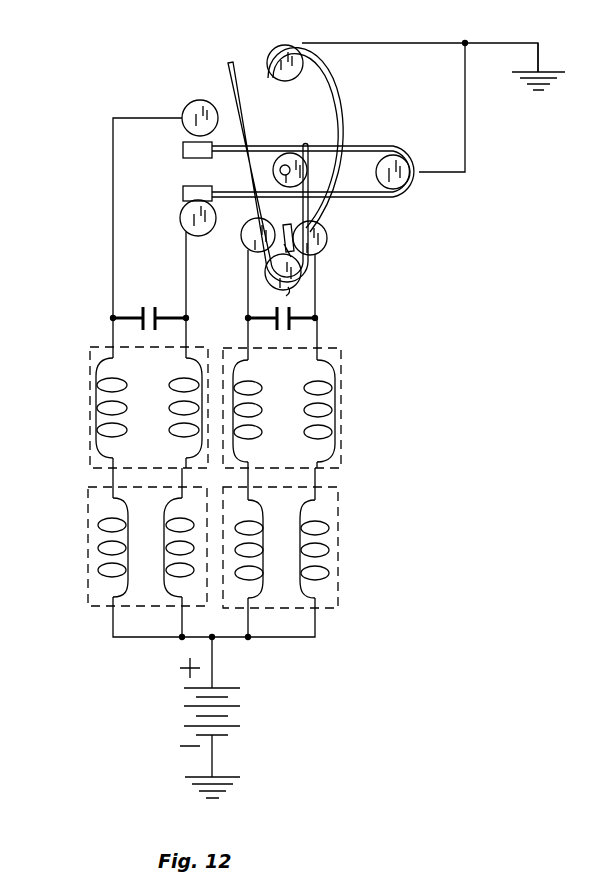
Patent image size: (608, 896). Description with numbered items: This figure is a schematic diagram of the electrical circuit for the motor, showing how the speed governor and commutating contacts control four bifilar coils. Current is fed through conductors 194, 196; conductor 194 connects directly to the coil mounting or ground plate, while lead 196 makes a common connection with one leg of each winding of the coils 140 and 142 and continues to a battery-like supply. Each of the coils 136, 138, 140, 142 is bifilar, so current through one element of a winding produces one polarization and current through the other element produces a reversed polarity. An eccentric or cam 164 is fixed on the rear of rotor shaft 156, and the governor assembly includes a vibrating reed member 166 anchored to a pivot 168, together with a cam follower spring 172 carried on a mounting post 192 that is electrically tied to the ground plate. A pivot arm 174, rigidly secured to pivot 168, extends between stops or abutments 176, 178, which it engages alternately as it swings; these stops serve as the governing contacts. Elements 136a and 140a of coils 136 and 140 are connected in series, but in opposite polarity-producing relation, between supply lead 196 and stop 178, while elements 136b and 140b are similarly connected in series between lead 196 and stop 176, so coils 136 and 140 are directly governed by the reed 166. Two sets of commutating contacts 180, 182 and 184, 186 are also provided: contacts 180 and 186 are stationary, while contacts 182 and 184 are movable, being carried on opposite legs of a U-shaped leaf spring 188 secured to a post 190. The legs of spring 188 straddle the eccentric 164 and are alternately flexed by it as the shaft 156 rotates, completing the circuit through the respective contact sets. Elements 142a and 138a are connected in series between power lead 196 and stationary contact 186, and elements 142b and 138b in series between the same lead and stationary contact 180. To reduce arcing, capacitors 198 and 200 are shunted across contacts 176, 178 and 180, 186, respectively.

The coil 136 is at (341, 382).
The element of coil 136 136a is at (318, 388).
The element of coil 136 136b is at (248, 432).
The coil 138 is at (90, 378).
The element of coil 138 138a is at (112, 385).
The element of coil 138 138b is at (185, 430).
The coil 140 is at (338, 570).
The element of coil 140 140a is at (314, 528).
The element of coil 140 140b is at (249, 573).
The coil 142 is at (88, 540).
The element of coil 142 142a is at (112, 525).
The element of coil 142 142b is at (180, 572).
The rotor shaft 156 is at (276, 157).
The eccentric or cam 164 is at (284, 164).
The vibrating reed member 166 is at (228, 80).
The pivot 168 is at (290, 288).
The cam follower spring 172 is at (340, 92).
The pivot arm 174 is at (314, 266).
The stop or abutment 176 is at (246, 244).
The stop or abutment 178 is at (325, 232).
The commutating contact 180 is at (182, 218).
The commutating contact 182 is at (183, 191).
The commutating contact 184 is at (183, 148).
The commutating contact 186 is at (185, 110).
The U-shaped leaf spring 188 is at (370, 148).
The post 190 is at (405, 160).
The mounting post 192 is at (294, 50).
The conductor 194 is at (468, 43).
The conductor or lead 196 is at (212, 672).
The capacitor 198 is at (298, 312).
The capacitor 200 is at (166, 282).